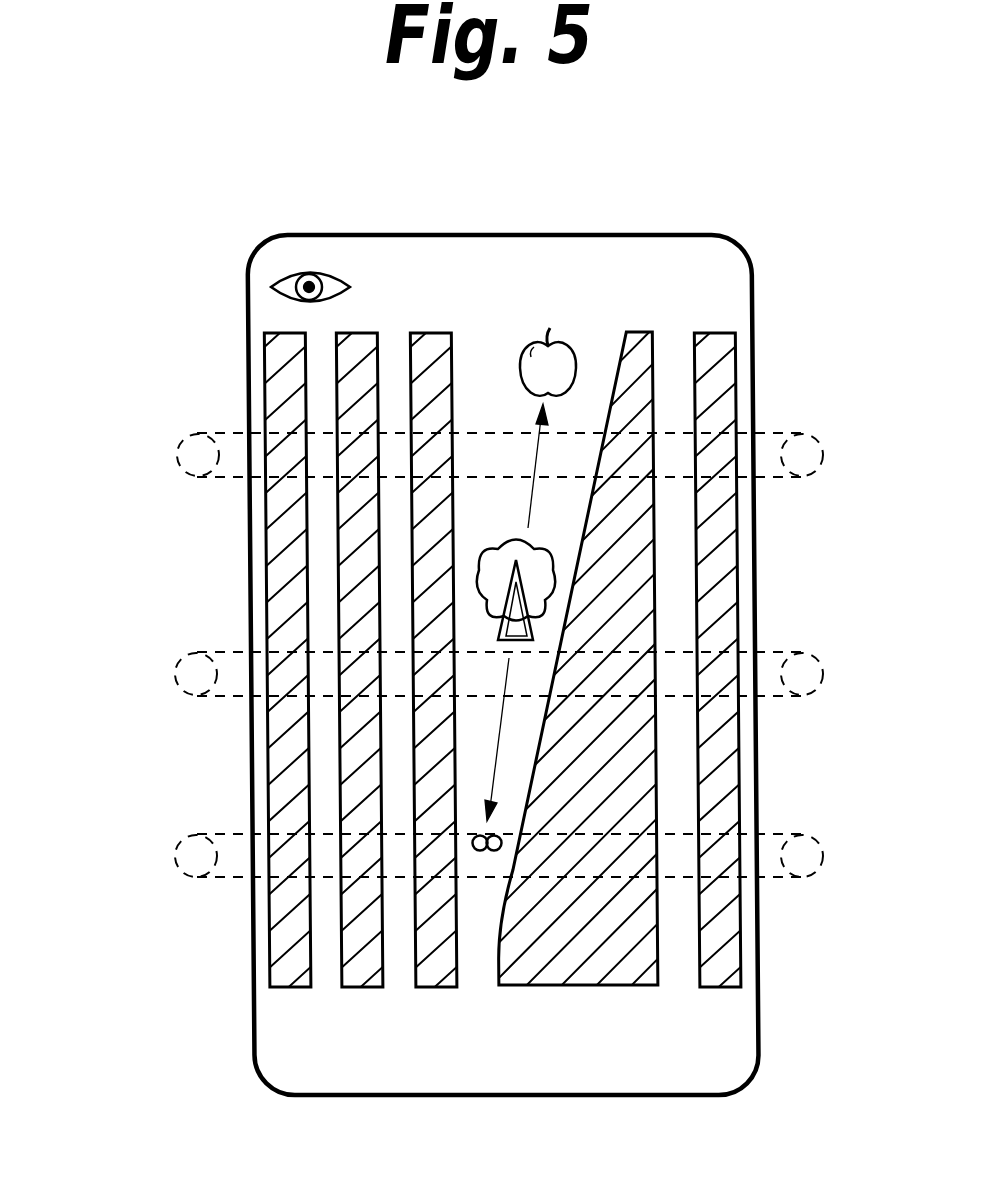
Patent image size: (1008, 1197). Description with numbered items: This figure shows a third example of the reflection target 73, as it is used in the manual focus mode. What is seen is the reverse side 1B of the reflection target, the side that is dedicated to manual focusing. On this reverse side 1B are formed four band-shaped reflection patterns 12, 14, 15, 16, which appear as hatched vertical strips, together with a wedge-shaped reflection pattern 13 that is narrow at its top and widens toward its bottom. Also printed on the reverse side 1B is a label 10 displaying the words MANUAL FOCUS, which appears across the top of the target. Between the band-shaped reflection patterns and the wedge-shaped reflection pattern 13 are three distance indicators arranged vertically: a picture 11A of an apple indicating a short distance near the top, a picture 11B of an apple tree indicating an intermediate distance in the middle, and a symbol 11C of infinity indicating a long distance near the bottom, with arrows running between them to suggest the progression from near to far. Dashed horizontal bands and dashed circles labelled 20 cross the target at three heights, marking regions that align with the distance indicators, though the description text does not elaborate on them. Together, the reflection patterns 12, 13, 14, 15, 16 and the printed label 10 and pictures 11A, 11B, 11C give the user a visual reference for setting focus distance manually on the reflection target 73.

The reflection target 73 is at (632, 210).
The label 10 is at (428, 248).
The reverse side 1B is at (707, 243).
The picture of an apple 11A is at (570, 338).
The picture of an apple tree 11B is at (535, 578).
The symbol of infinity 11C is at (483, 875).
The band-shaped reflection pattern 12 is at (727, 958).
The wedge-shaped reflection pattern 13 is at (586, 969).
The band-shaped reflection pattern 14 is at (437, 975).
The band-shaped reflection pattern 15 is at (365, 975).
The band-shaped reflection pattern 16 is at (290, 975).
The touch operation areas 20 is at (178, 460).